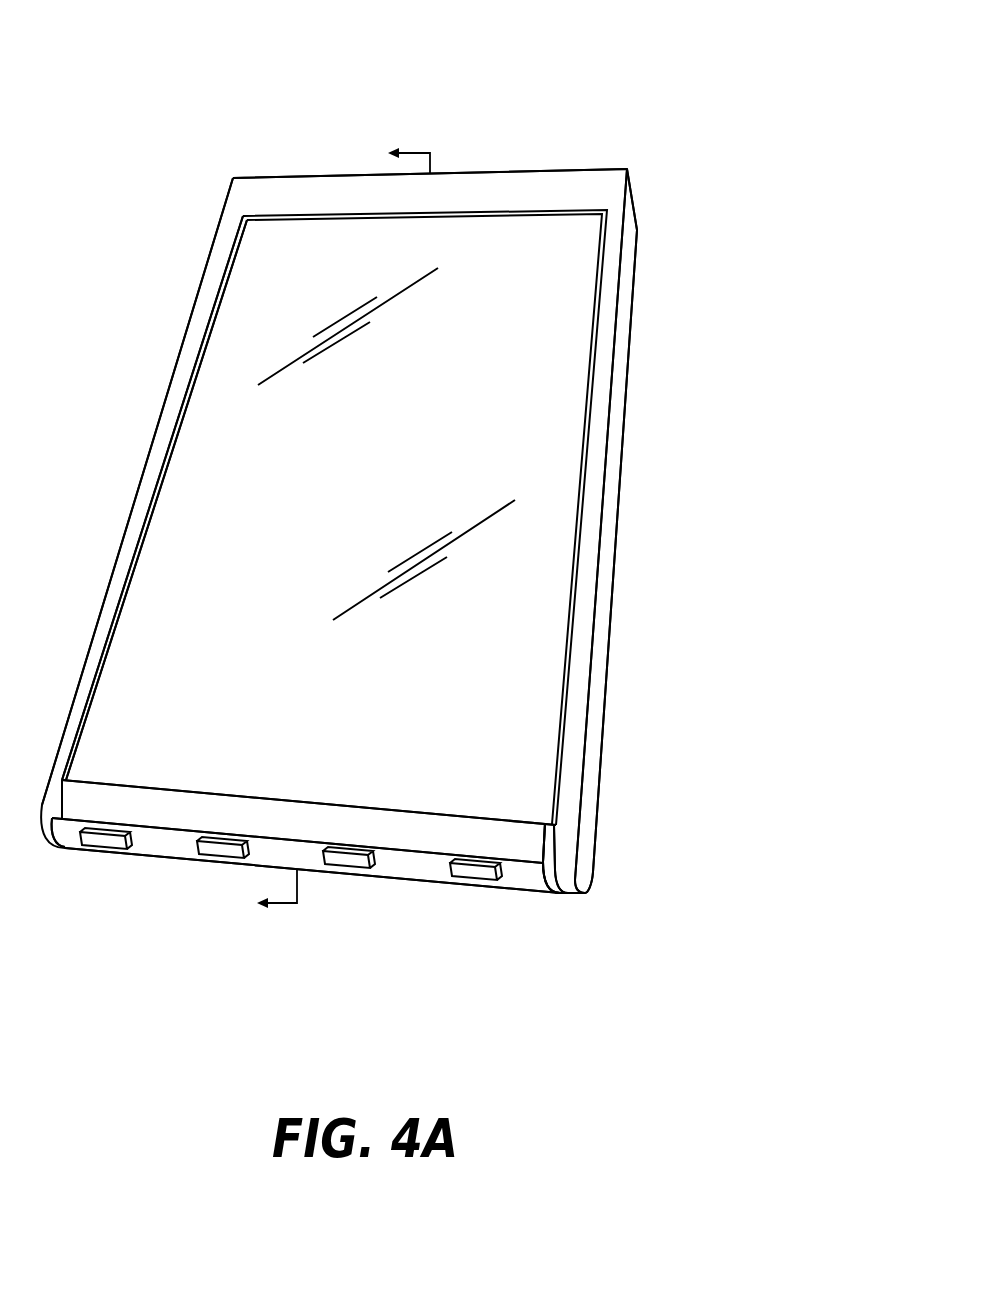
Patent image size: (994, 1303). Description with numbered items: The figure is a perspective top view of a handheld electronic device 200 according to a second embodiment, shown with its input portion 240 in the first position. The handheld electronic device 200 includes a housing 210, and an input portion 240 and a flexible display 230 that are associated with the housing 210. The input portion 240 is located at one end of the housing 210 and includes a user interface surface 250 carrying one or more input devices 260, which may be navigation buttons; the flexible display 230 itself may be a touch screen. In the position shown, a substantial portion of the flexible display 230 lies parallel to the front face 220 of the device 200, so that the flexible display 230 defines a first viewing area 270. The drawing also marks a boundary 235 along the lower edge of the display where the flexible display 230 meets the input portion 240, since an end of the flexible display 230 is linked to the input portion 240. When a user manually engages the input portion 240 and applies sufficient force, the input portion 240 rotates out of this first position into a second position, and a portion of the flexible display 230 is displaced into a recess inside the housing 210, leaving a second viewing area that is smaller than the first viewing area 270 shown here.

The handheld electronic device 200 is at (621, 136).
The housing 210 is at (608, 552).
The front face 220 is at (528, 203).
The flexible display 230 is at (185, 438).
The bottom edge of display 235 is at (552, 827).
The input portion 240 is at (153, 878).
The user interface surface 250 is at (530, 880).
The input devices 260 is at (463, 877).
The first viewing area 270 is at (365, 498).